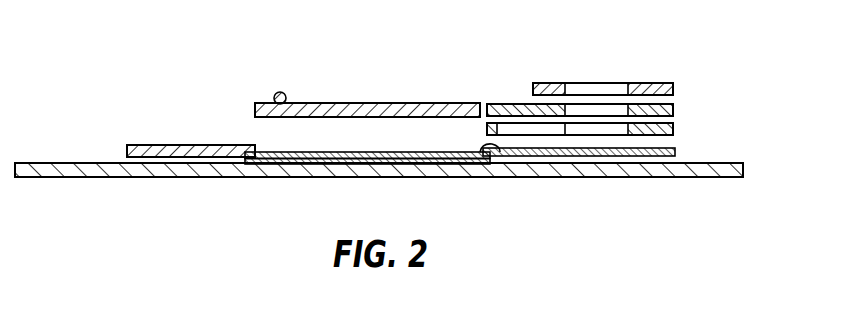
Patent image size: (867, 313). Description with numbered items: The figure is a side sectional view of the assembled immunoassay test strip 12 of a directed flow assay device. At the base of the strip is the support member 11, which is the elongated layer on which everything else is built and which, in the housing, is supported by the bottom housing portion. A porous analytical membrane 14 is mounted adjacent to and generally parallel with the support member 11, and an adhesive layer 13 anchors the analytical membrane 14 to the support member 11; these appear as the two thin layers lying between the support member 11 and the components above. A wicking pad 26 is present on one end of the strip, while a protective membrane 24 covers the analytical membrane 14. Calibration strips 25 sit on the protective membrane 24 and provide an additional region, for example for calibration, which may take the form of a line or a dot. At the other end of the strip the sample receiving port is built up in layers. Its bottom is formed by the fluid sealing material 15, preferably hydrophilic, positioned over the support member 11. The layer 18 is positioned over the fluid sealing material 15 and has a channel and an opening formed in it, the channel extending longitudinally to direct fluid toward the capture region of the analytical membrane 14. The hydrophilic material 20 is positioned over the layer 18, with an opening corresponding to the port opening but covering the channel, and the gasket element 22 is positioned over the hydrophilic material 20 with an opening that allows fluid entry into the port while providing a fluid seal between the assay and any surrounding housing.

The support member 11 is at (654, 178).
The immunoassay test strip 12 is at (134, 43).
The adhesive layer 13 is at (375, 165).
The porous analytical membrane 14 is at (303, 165).
The fluid sealing material 15 is at (675, 152).
The layer 18 is at (675, 129).
The hydrophilic material 20 is at (675, 110).
The gasket element 22 is at (656, 83).
The protective membrane 24 is at (387, 103).
The calibration strips 25 is at (280, 92).
The wicking pad 26 is at (174, 144).